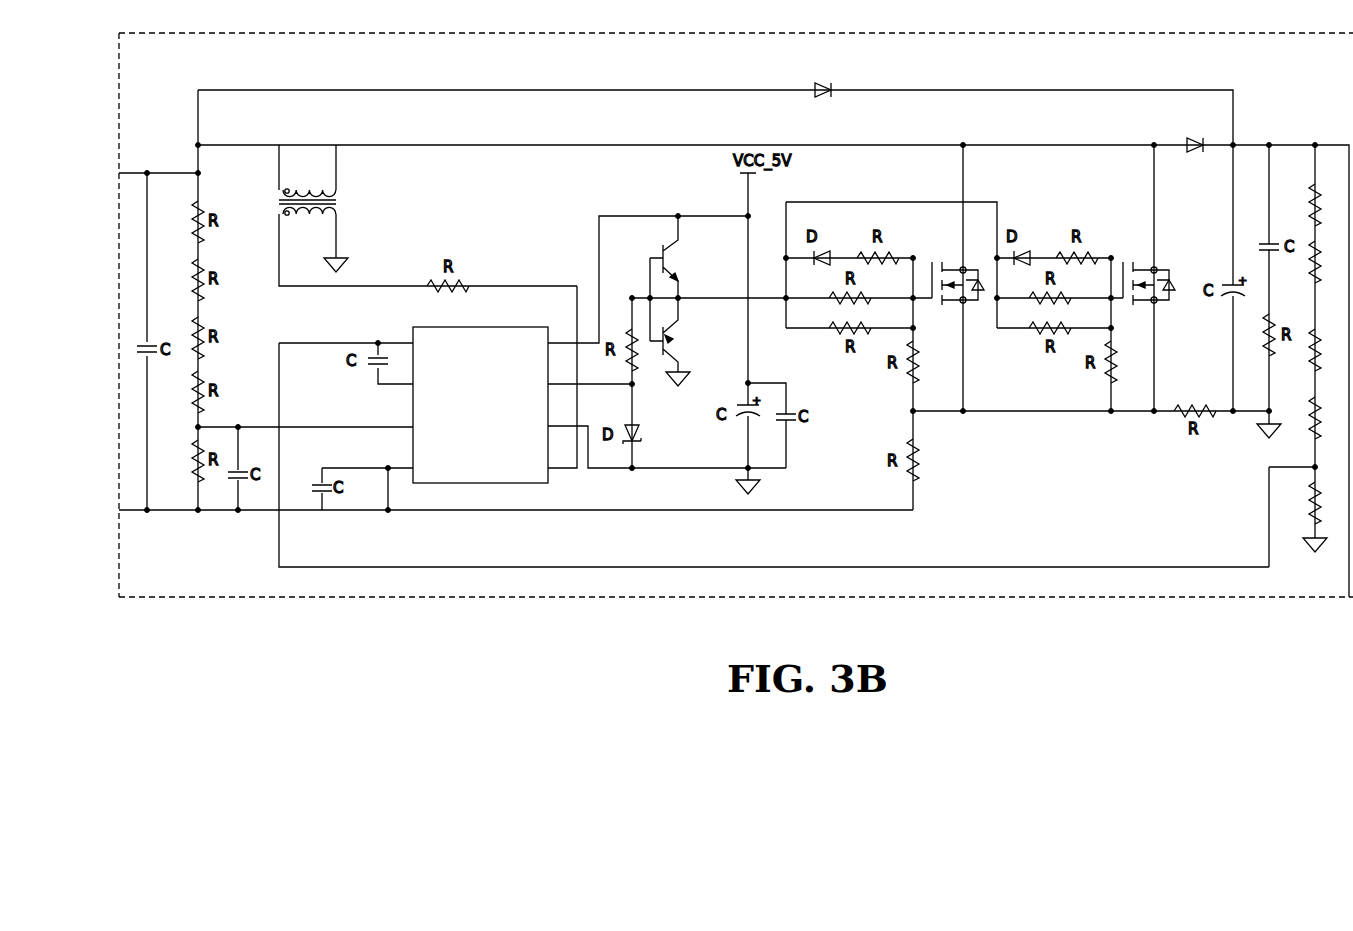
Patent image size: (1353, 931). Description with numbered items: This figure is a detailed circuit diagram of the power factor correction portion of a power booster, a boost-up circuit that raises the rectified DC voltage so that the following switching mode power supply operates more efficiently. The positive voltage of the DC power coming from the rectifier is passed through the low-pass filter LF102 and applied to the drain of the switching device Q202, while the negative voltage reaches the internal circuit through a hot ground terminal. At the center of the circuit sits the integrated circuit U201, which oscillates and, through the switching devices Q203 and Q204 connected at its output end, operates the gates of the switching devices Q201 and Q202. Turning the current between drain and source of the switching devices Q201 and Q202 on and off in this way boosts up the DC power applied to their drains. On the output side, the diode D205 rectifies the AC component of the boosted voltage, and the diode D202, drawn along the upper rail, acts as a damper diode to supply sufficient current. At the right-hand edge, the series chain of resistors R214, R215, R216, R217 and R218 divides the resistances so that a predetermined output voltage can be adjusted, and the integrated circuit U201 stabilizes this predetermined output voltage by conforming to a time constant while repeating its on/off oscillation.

The low-pass filter LF102 is at (428, 202).
The integrated circuit U201 is at (480, 390).
The switching device Q201 is at (949, 272).
The switching device Q202 is at (1161, 272).
The switching device Q203 is at (691, 257).
The switching device Q204 is at (691, 342).
The damper diode D202 is at (823, 78).
The diode D205 is at (1193, 133).
The resistor R214 is at (1327, 207).
The resistor R215 is at (1327, 265).
The resistor R216 is at (1327, 353).
The resistor R217 is at (1327, 421).
The resistor R218 is at (1327, 506).